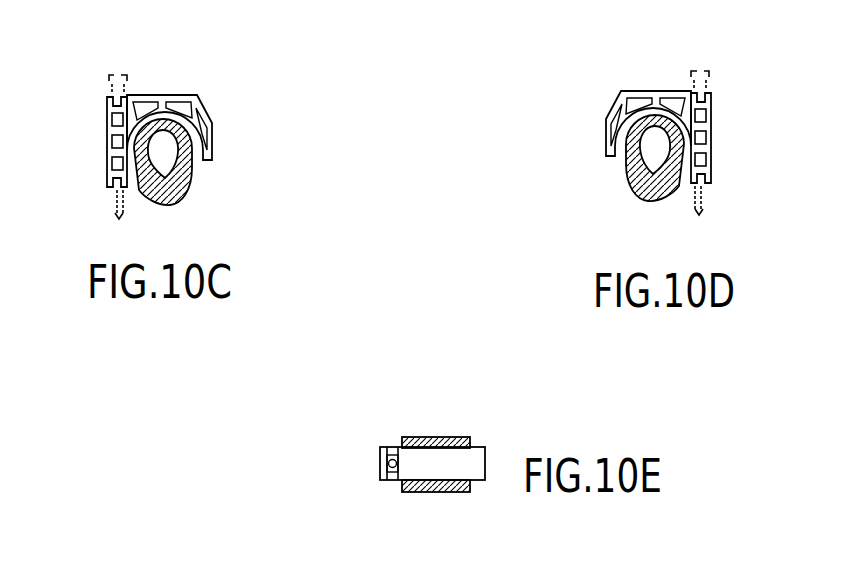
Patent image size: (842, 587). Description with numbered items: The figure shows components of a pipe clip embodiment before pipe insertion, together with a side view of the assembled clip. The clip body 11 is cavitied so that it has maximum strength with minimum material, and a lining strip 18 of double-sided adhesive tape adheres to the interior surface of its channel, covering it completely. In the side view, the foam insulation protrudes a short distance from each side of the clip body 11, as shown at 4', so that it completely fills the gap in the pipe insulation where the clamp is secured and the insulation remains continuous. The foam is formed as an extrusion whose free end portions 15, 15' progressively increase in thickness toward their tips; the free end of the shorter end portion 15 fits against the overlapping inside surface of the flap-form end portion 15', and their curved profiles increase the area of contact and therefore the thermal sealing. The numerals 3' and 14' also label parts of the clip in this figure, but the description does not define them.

In FIG. 10C, the profile rail / carrier strip 3' is at (138, 131).
In FIG. 10E, the profile rail / carrier strip 3' is at (367, 470).
In FIG. 10D, the holding profile 14' is at (685, 127).
In FIG. 10C, the free end portion 15 is at (125, 180).
In FIG. 10D, the free end portion 15 is at (666, 197).
In FIG. 10C, the free end portion 15' is at (181, 177).
In FIG. 10D, the free end portion 15' is at (638, 171).
In FIG. 10C, the lining strip 18 is at (142, 186).
In FIG. 10D, the lining strip 18 is at (689, 188).
In FIG. 10E, the protruding foam insulation 4' is at (436, 450).
In FIG. 10E, the clip body 11 is at (455, 458).